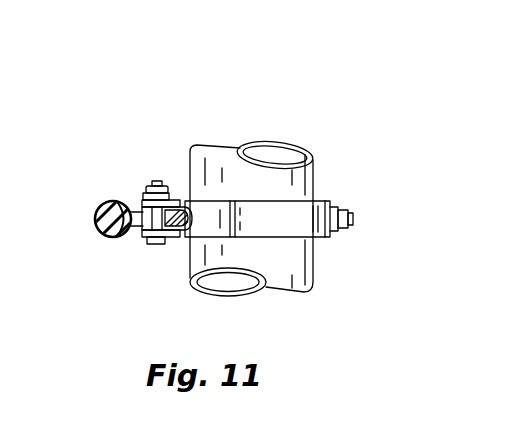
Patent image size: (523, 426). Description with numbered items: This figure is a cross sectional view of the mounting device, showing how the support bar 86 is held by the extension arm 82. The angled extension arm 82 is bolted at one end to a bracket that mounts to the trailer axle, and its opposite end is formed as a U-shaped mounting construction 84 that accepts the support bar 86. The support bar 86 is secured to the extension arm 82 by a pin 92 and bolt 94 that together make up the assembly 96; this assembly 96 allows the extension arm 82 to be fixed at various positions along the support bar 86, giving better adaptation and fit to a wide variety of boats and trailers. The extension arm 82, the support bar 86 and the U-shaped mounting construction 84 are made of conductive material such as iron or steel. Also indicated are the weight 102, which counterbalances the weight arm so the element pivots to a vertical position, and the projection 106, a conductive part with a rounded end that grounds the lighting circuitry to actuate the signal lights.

The extension arm 82 is at (293, 220).
The U-shaped mounting construction 84 is at (173, 233).
The support bar 86 is at (182, 202).
The pin 92 is at (148, 186).
The bolt 94 is at (157, 181).
The pin and bolt assembly 96 is at (173, 148).
The weight 102 is at (97, 232).
The projection 106 is at (134, 204).